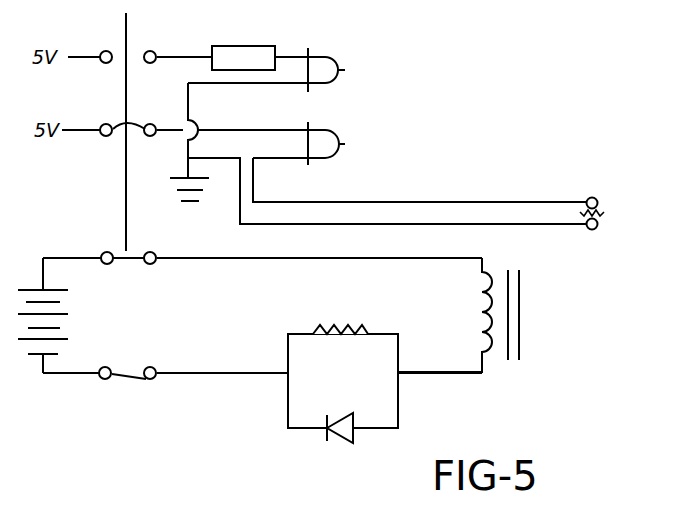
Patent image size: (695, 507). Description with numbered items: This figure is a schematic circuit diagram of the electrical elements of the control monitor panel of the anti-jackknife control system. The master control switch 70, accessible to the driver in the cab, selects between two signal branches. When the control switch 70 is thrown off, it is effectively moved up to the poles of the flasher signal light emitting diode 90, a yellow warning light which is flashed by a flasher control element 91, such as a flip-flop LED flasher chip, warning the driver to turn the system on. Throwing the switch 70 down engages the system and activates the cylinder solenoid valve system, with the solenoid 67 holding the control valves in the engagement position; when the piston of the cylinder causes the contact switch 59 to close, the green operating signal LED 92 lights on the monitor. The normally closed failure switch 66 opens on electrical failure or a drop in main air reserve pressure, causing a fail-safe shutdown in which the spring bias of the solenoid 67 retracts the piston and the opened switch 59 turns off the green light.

The master control switch 70 is at (130, 35).
The flasher control element 91 is at (243, 45).
The flasher signal light emitting diode 90 is at (345, 70).
The green operating signal LED 92 is at (345, 144).
The contact switch 59 is at (608, 200).
The normally closed failure switch 66 is at (128, 377).
The solenoid 67 is at (572, 278).